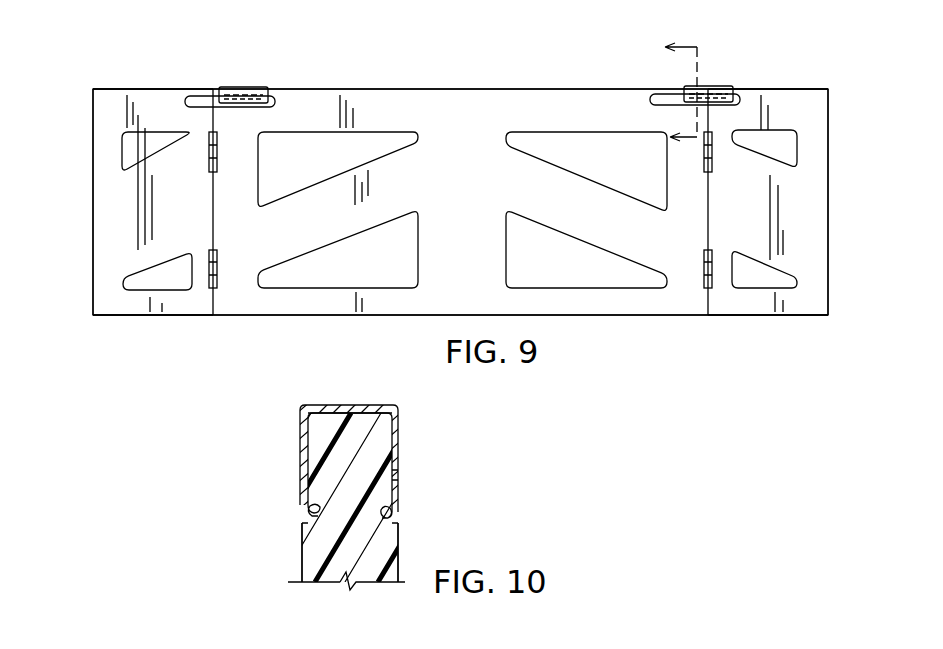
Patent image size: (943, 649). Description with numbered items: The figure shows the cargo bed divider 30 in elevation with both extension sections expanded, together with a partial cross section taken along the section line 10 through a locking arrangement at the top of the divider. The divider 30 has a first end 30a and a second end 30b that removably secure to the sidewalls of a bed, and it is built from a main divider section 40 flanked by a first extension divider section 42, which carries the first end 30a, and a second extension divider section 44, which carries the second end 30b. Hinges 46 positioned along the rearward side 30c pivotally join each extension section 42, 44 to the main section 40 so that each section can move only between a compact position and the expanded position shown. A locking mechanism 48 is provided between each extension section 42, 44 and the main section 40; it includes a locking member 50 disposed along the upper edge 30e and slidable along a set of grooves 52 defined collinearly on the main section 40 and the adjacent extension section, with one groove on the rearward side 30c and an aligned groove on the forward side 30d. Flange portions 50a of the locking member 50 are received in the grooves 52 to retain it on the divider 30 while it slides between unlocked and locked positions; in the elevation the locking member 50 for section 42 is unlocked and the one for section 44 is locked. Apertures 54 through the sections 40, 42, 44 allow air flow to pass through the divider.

In FIG. 9, the section line for FIG. 10 is at (681, 93).
In FIG. 9, the cargo bed divider 30 is at (471, 80).
In FIG. 10, the cargo bed divider 30 is at (314, 501).
In FIG. 9, the first end 30a is at (93, 265).
In FIG. 9, the second end 30b is at (828, 290).
In FIG. 9, the rearward side 30c is at (436, 278).
In FIG. 10, the rearward side 30c is at (300, 562).
In FIG. 10, the forward side 30d is at (398, 552).
In FIG. 9, the upper edge 30e is at (534, 88).
In FIG. 10, the upper edge 30e is at (350, 405).
In FIG. 9, the main divider section 40 is at (438, 107).
In FIG. 9, the first extension divider section 42 is at (150, 105).
In FIG. 9, the second extension divider section 44 is at (800, 100).
In FIG. 9, the hinges 46 is at (216, 148).
In FIG. 9, the locking mechanism 48 is at (268, 80).
In FIG. 10, the locking mechanism 48 is at (412, 432).
In FIG. 9, the locking member 50 is at (240, 92).
In FIG. 10, the locking member 50 is at (395, 477).
In FIG. 10, the flange portions 50a is at (385, 522).
In FIG. 9, the grooves 52 is at (200, 100).
In FIG. 10, the grooves 52 is at (305, 512).
In FIG. 9, the apertures 54 is at (368, 150).